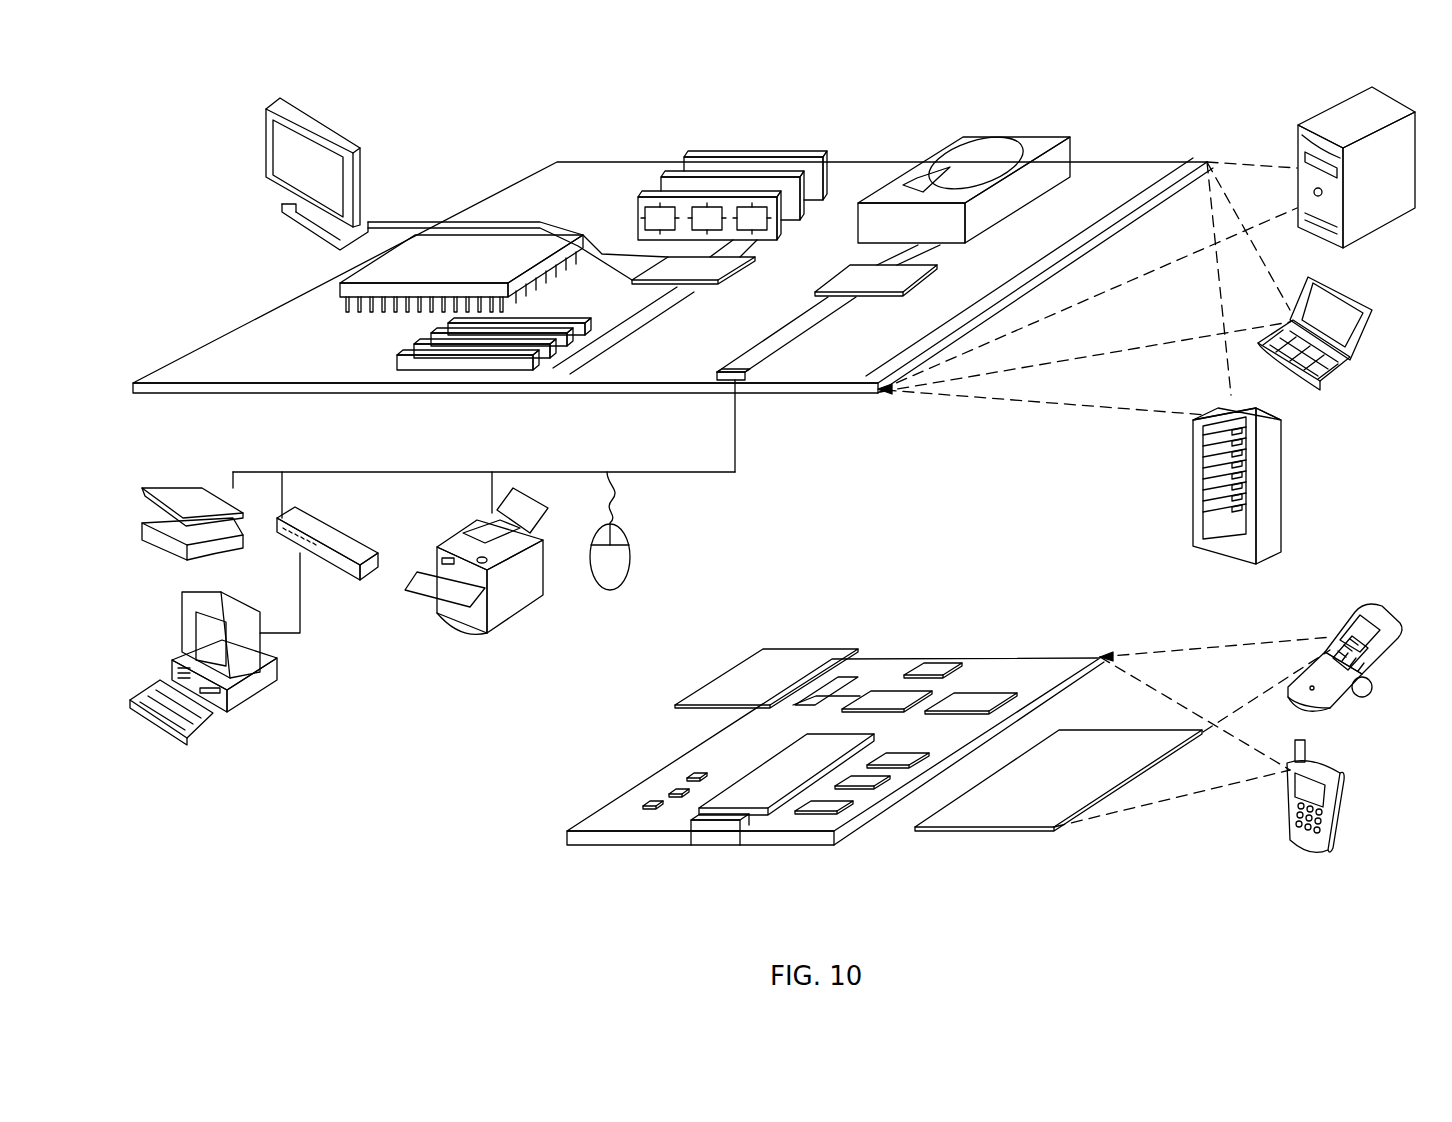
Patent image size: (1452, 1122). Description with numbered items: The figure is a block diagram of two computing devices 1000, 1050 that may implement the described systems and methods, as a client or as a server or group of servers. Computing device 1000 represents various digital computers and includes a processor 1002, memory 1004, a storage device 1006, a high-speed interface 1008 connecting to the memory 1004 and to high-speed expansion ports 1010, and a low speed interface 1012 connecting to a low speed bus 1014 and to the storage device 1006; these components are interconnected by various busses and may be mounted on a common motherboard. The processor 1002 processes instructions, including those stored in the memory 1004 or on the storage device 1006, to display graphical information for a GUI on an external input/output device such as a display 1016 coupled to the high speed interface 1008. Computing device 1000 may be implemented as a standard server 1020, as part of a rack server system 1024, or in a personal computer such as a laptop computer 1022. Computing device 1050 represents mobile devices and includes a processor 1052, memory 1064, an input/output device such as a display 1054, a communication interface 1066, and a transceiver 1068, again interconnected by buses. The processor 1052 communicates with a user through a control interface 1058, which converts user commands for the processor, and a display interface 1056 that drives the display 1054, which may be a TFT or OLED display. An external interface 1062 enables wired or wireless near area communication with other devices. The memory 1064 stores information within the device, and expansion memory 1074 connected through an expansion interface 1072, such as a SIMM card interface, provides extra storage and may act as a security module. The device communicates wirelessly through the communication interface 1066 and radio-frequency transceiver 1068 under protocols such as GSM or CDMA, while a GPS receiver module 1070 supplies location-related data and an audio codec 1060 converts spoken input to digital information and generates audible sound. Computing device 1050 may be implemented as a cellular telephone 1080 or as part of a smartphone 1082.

The computing device 1000 is at (478, 130).
The processor 1002 is at (352, 290).
The memory 1004 is at (700, 158).
The storage device 1006 is at (945, 135).
The high-speed interface 1008 is at (668, 270).
The high-speed expansion ports 1010 is at (425, 350).
The low speed interface 1012 is at (857, 274).
The low speed bus 1014 is at (745, 380).
The display 1016 is at (268, 102).
The standard server 1020 is at (1298, 143).
The laptop computer 1022 is at (1370, 308).
The rack server system 1024 is at (1193, 512).
The computing device 1050 is at (543, 845).
The processor 1052 is at (758, 806).
The display 1054 is at (1014, 813).
The display interface 1056 is at (830, 813).
The control interface 1058 is at (867, 781).
The audio codec 1060 is at (895, 760).
The external interface 1062 is at (721, 836).
The memory 1064 is at (660, 785).
The communication interface 1066 is at (888, 700).
The transceiver 1068 is at (973, 698).
The GPS receiver module 1070 is at (941, 660).
The expansion interface 1072 is at (807, 672).
The expansion memory 1074 is at (733, 674).
The cellular telephone 1080 is at (1355, 612).
The smartphone 1082 is at (1287, 800).